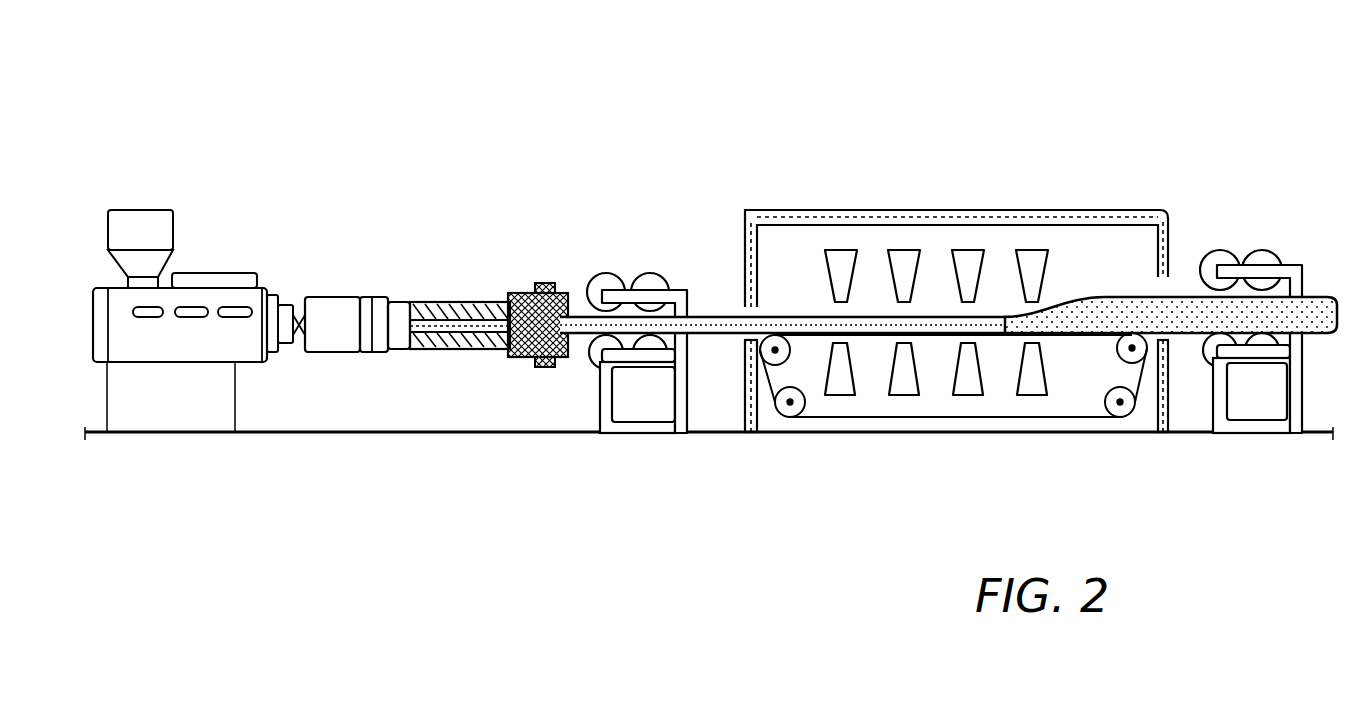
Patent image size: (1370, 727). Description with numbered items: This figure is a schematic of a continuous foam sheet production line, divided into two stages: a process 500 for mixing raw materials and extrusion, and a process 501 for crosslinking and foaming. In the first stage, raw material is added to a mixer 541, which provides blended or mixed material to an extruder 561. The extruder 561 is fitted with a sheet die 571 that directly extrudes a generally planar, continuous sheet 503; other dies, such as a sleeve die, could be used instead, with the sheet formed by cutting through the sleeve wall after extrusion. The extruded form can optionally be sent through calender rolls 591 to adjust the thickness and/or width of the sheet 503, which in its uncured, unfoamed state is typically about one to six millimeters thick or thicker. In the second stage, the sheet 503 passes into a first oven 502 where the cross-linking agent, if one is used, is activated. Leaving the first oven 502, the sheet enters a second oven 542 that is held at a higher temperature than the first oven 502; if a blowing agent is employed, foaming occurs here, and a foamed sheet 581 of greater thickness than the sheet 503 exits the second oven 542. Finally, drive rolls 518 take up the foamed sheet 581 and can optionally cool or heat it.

The process 500 is at (83, 93).
The process 501 is at (763, 93).
The first oven 502 is at (833, 252).
The continuous sheet 503 is at (717, 313).
The drive rolls 518 is at (1276, 258).
The mixer 541 is at (233, 293).
The second oven 542 is at (1122, 212).
The extruder 561 is at (345, 310).
The sheet die 571 is at (530, 300).
The foamed sheet 581 is at (1178, 297).
The calender rolls 591 is at (612, 276).